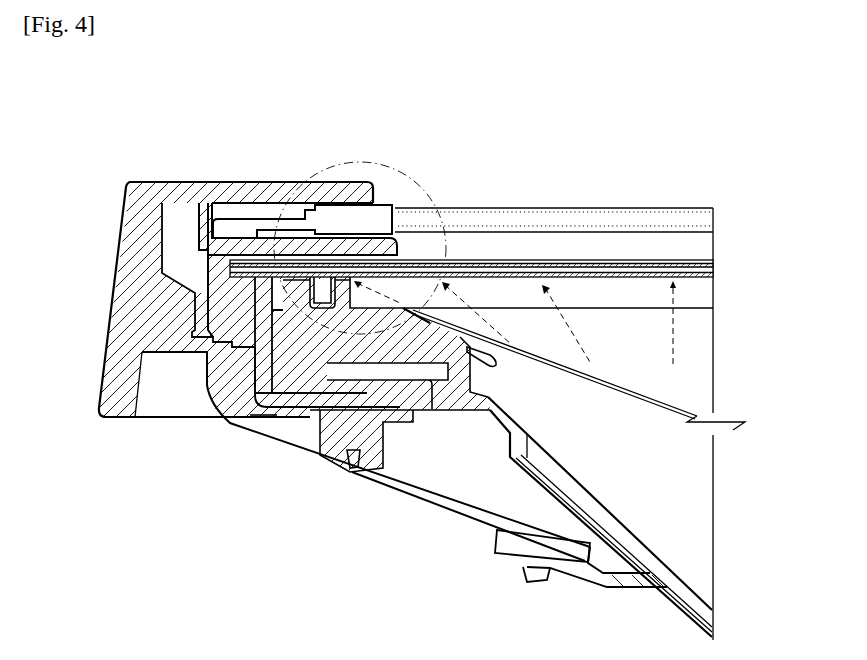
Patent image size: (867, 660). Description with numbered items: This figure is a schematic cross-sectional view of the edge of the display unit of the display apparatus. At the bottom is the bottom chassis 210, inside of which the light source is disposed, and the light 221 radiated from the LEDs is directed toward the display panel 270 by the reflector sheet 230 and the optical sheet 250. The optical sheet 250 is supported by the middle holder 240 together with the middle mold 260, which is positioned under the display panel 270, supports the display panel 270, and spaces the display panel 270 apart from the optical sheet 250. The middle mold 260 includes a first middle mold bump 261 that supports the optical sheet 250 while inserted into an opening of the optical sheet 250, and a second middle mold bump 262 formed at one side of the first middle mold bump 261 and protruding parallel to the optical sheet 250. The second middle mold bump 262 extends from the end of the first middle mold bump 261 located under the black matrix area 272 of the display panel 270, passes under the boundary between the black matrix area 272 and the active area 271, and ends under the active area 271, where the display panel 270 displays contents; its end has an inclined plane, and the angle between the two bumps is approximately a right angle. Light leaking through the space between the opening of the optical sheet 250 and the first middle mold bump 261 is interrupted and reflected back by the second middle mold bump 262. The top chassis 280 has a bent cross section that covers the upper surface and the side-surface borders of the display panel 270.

The bottom chassis 210 is at (643, 588).
The LED / light 221 is at (673, 328).
The reflector sheet 230 is at (663, 402).
The middle holder 240 is at (290, 389).
The optical sheet 250 is at (721, 250).
The middle mold 260 is at (191, 197).
The first middle mold bump 261 is at (308, 288).
The second middle mold bump 262 is at (395, 253).
The display panel 270 is at (565, 208).
The active area 271 is at (656, 216).
The black matrix area 272 is at (350, 217).
The top chassis 280 is at (121, 414).